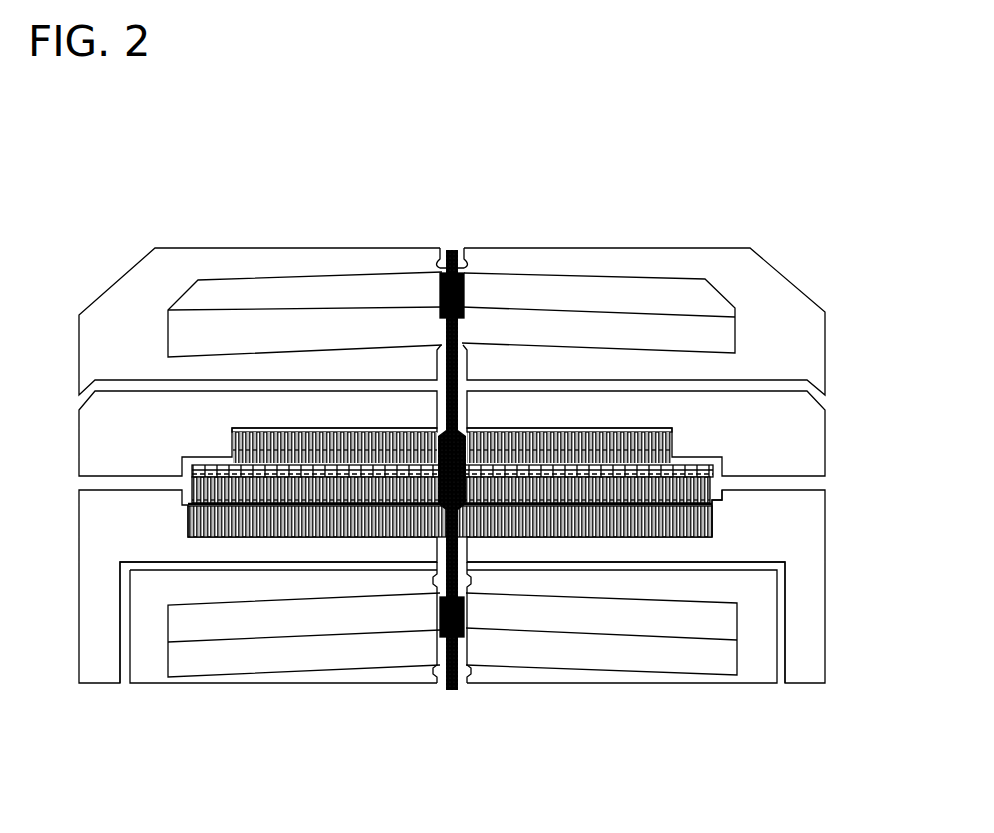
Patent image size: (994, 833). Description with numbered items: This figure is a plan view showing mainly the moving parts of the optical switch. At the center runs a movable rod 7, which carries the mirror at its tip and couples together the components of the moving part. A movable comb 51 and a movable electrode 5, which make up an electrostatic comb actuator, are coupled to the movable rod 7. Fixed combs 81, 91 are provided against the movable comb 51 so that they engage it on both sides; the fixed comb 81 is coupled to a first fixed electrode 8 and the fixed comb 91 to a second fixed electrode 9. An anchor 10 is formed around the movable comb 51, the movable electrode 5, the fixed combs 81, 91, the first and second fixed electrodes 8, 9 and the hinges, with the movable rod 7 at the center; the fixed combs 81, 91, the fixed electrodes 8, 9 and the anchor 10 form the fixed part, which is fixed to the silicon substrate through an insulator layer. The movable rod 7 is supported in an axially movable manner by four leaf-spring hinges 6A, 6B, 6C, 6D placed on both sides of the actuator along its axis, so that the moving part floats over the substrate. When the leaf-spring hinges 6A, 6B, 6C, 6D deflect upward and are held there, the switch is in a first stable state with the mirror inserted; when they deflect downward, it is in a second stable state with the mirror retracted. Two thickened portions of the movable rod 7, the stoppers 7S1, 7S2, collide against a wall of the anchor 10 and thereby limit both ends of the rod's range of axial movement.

The anchor 10 is at (825, 338).
The second fixed electrode 9 is at (825, 440).
The first fixed electrode 8 is at (825, 648).
The fixed comb 81 is at (712, 527).
The fixed comb 91 is at (673, 440).
The movable electrode 5 is at (722, 464).
The movable comb 51 is at (723, 497).
The movable rod 7 is at (460, 648).
The stopper 7S1 is at (462, 292).
The stopper 7S2 is at (442, 610).
The leaf-spring hinge 6A is at (320, 312).
The leaf-spring hinge 6B is at (567, 310).
The leaf-spring hinge 6C is at (292, 638).
The leaf-spring hinge 6D is at (605, 635).